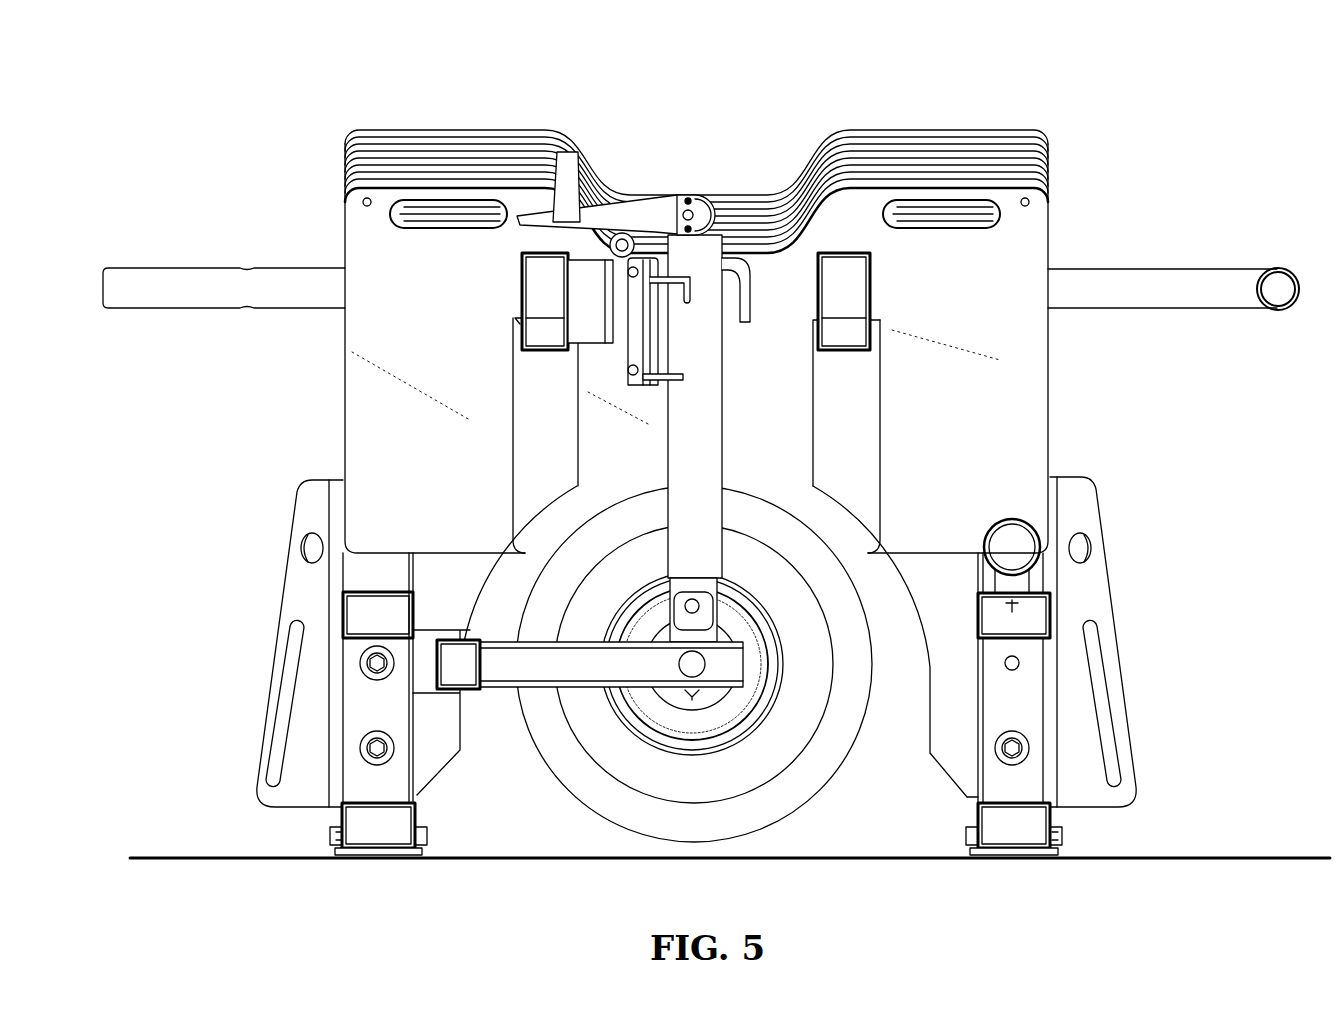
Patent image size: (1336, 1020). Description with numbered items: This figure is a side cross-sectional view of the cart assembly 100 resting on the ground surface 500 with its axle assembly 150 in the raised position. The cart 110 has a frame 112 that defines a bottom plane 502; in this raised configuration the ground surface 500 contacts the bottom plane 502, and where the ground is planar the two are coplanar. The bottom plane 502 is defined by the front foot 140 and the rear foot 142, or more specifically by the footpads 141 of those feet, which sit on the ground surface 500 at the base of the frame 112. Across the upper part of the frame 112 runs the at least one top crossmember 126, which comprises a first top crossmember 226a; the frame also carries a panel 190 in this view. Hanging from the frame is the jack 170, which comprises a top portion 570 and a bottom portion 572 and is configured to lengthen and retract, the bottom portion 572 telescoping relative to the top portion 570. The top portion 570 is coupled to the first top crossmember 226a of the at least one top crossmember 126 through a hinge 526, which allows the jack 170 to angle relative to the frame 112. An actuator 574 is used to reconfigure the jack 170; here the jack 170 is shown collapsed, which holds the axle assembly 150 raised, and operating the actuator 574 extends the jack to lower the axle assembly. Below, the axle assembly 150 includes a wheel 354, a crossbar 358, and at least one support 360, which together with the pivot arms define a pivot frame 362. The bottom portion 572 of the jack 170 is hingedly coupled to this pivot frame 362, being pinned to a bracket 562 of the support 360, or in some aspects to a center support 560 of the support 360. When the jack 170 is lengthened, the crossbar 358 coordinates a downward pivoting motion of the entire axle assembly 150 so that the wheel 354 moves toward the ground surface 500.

The cart assembly 100 is at (200, 130).
The cart 110 is at (651, 148).
The frame 112 is at (651, 148).
The at least one top crossmember 126 is at (651, 148).
The first top crossmember 226a is at (651, 148).
The actuator 574 is at (563, 163).
The hinge 526 is at (607, 230).
The top portion 570 is at (698, 290).
The shield panel 190 is at (697, 298).
The jack 170 is at (707, 440).
The bracket 562 is at (675, 617).
The bottom portion 572 is at (707, 585).
The crossbar 358 is at (664, 742).
The pivot frame 362 is at (664, 742).
The axle assembly 150 is at (721, 672).
The wheel 354 is at (637, 815).
The support 360 is at (785, 748).
The center support 560 is at (712, 668).
The ground surface 500 is at (730, 790).
The bottom plane 502 is at (1214, 852).
The front foot 140 is at (364, 858).
The footpad 141 is at (683, 703).
The rear foot 142 is at (1012, 858).